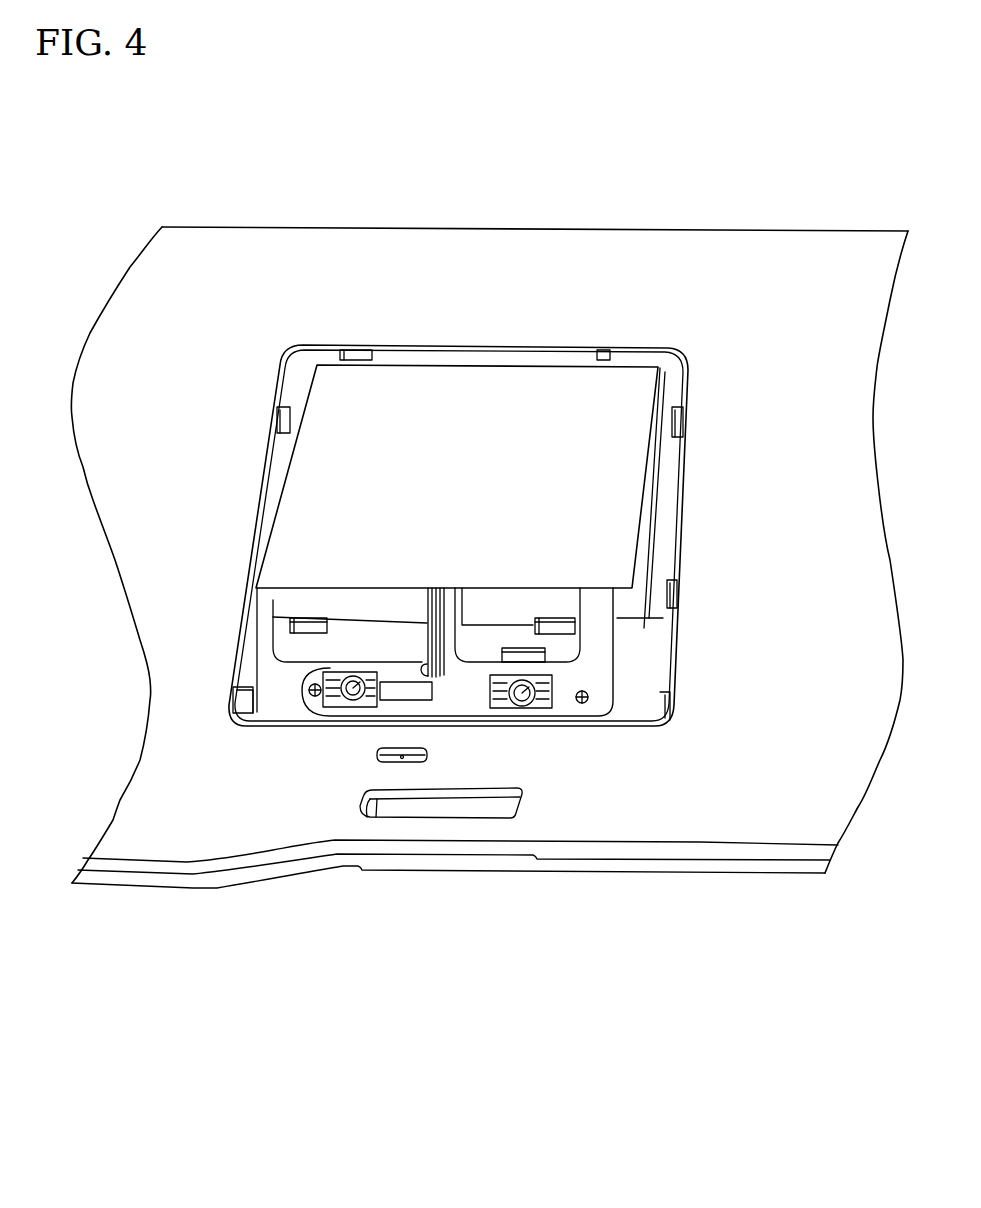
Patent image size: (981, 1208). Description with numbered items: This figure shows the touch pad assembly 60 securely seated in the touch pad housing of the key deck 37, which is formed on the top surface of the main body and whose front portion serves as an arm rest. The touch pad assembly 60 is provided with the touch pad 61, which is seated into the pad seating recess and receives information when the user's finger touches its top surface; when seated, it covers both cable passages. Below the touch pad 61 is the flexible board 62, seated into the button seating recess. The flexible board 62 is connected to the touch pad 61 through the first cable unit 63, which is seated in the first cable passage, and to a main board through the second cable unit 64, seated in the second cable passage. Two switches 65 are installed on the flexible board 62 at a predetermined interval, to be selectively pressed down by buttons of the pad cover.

The key deck 37 is at (287, 918).
The touch pad assembly 60 is at (514, 541).
The touch pad 61 is at (510, 383).
The flexible board 62 is at (430, 700).
The first cable unit 63 is at (430, 613).
The second cable unit 64 is at (597, 659).
The switches 65 is at (345, 700).